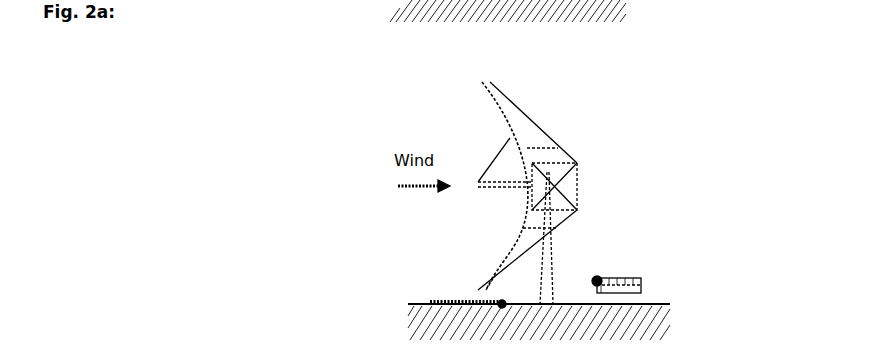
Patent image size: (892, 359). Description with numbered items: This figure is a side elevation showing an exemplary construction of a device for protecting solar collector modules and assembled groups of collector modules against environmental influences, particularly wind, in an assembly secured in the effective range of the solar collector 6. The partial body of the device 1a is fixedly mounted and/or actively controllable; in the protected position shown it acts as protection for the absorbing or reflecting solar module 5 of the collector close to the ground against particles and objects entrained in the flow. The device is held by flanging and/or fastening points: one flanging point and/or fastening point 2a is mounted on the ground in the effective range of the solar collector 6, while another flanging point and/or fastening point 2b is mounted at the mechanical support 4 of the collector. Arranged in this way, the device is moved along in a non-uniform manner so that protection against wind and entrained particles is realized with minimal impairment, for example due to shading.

The partial body of the device 1a is at (443, 290).
The flanging point and/or fastening point mounted on ground 2a is at (497, 270).
The flanging point and/or fastening point mounted at mechanical support 2b is at (585, 271).
The mechanical support 4 is at (641, 290).
The absorbing or reflecting solar module 5 is at (507, 230).
The solar collector 6 is at (570, 178).